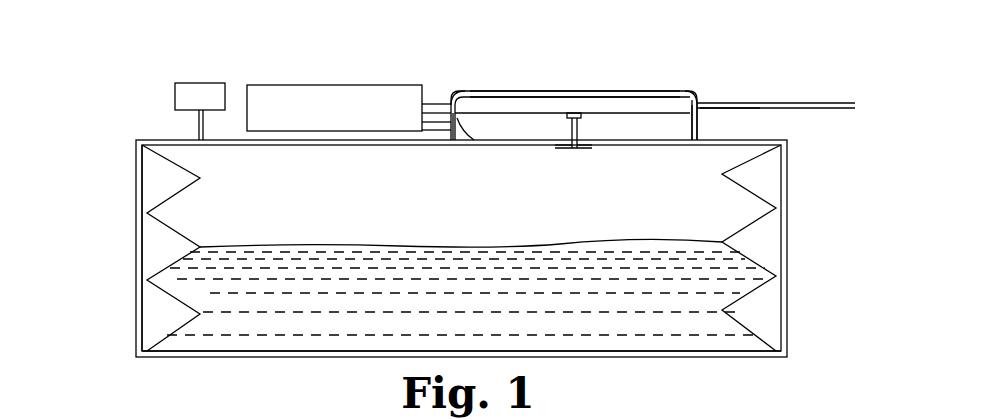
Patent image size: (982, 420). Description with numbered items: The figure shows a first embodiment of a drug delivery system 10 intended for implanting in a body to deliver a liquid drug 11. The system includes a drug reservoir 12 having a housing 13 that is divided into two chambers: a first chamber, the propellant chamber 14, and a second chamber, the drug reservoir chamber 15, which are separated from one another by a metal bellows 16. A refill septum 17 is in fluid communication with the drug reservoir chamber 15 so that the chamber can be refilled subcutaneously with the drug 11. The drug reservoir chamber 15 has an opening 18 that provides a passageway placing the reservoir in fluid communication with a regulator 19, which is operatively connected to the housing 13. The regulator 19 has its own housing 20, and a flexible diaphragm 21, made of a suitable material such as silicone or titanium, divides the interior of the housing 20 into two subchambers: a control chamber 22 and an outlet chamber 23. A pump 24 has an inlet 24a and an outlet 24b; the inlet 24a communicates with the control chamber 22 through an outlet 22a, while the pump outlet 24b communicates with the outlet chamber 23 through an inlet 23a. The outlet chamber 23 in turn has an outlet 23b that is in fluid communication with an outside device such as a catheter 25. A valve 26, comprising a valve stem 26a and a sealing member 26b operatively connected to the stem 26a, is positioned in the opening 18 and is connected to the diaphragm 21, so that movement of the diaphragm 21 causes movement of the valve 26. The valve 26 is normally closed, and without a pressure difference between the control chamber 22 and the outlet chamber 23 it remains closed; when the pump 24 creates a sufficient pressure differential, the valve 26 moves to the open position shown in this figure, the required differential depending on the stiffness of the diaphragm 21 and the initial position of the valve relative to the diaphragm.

The drug delivery system 10 is at (116, 111).
The liquid drug 11 is at (423, 322).
The drug reservoir 12 is at (134, 270).
The housing 13 is at (140, 326).
The propellant chamber 14 is at (150, 233).
The drug reservoir chamber 15 is at (473, 227).
The metal bellows 16 is at (170, 192).
The refill septum 17 is at (200, 83).
The opening 18 is at (581, 138).
The regulator 19 is at (503, 90).
The regulator housing 20 is at (668, 90).
The flexible diaphragm 21 is at (521, 112).
The control chamber 22 is at (700, 123).
The outlet of control chamber 22a is at (468, 130).
The outlet chamber 23 is at (698, 100).
The inlet of outlet chamber 23a is at (466, 92).
The outlet of outlet chamber 23b is at (742, 112).
The pump 24 is at (322, 85).
The pump inlet 24a is at (425, 138).
The pump outlet 24b is at (434, 104).
The catheter 25 is at (805, 103).
The valve 26 is at (599, 149).
The valve stem 26a is at (570, 125).
The sealing member 26b is at (583, 150).